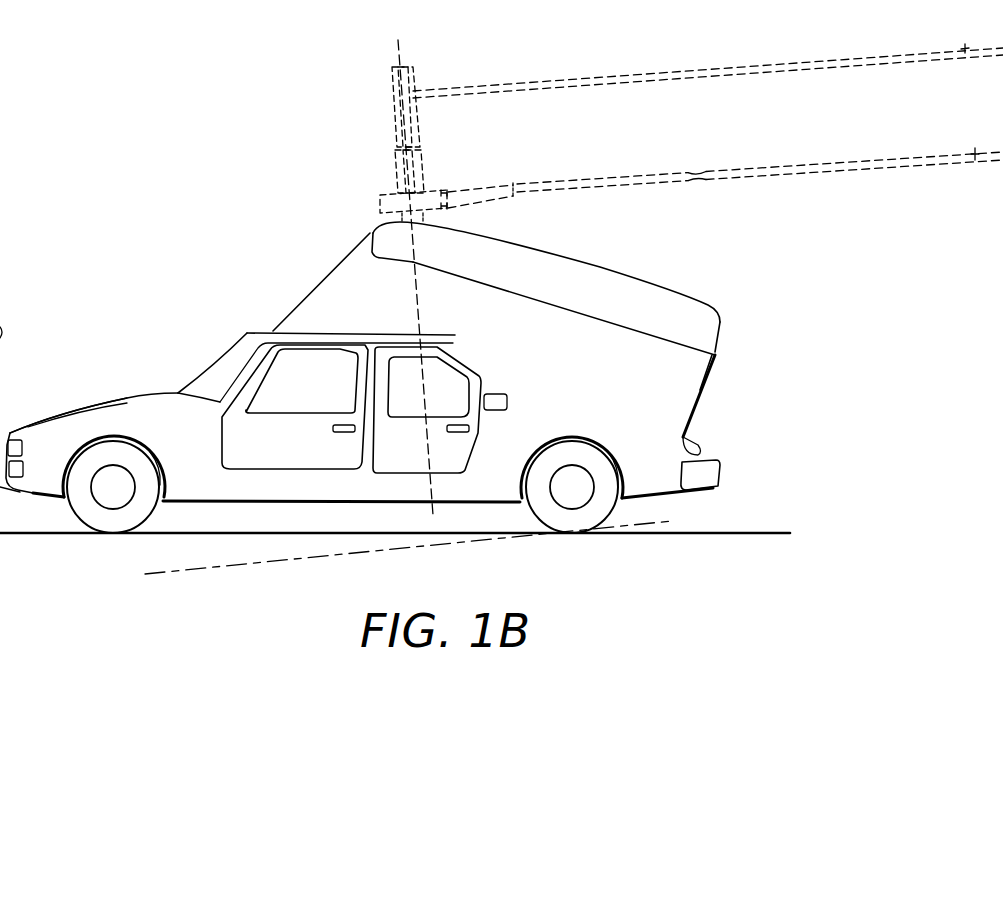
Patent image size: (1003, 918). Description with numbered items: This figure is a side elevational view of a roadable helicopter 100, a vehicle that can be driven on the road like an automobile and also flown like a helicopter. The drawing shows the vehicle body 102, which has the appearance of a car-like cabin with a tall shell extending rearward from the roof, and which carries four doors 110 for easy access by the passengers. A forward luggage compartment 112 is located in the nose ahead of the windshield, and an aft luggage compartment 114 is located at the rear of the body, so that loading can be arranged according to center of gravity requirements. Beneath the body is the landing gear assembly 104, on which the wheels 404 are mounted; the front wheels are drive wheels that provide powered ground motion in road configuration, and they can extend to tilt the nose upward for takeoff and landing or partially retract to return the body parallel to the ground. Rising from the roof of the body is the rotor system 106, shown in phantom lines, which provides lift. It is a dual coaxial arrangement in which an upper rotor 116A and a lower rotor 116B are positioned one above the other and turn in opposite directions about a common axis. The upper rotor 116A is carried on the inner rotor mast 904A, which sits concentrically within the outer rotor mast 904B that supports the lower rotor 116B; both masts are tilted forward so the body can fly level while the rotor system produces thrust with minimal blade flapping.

The roadable helicopter 100 is at (716, 442).
The vehicle body 102 is at (148, 407).
The landing gear assembly 104 is at (580, 523).
The rotor system 106 is at (395, 120).
The doors 110 is at (415, 462).
The forward luggage compartment 112 is at (47, 408).
The aft luggage compartment 114 is at (703, 393).
The upper rotor 116A is at (488, 83).
The lower rotor 116B is at (535, 187).
The wheels 404 is at (102, 488).
The inner rotor mast 904A is at (412, 73).
The outer rotor mast 904B is at (395, 168).